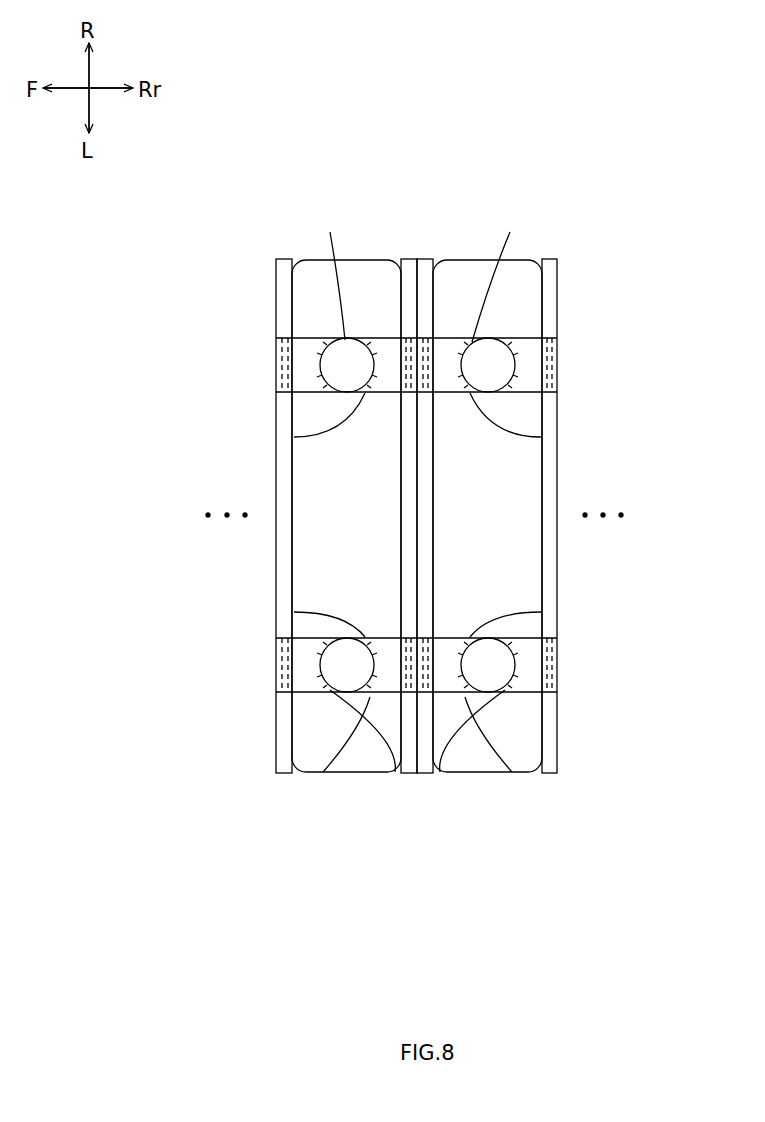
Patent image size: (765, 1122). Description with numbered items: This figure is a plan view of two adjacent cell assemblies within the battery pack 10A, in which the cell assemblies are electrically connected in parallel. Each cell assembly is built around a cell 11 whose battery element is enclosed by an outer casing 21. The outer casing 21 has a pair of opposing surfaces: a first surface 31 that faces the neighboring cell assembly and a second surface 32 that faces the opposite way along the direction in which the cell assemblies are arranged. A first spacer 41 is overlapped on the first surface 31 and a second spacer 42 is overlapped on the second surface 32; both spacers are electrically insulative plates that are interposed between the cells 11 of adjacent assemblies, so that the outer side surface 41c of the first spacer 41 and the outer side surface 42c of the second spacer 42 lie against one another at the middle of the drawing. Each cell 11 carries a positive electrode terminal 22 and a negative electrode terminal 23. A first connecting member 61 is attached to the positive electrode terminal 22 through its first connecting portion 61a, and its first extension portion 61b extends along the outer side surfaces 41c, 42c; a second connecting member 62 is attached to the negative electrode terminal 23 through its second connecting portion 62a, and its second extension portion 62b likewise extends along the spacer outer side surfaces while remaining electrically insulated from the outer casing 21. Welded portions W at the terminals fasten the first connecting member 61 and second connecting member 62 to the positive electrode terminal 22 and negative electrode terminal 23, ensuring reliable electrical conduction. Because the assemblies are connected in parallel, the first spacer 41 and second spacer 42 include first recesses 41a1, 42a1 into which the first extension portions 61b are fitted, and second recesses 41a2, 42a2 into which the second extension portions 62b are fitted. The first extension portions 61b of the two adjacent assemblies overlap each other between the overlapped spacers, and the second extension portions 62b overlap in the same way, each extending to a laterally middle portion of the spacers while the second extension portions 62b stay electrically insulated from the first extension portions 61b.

The battery pack 10A is at (664, 127).
The cell 11 is at (318, 260).
The outer casing 21 is at (294, 530).
The positive electrode terminal 22 is at (358, 340).
The negative electrode terminal 23 is at (328, 690).
The first surface 31 is at (401, 525).
The second surface 32 is at (433, 525).
The first spacer 41 is at (411, 259).
The first recess 41a1 is at (401, 400).
The second recess 41a2 is at (401, 637).
The outer side surface 41c is at (417, 490).
The second spacer 42 is at (276, 268).
The first recess 42a1 is at (276, 388).
The second recess 42a2 is at (434, 637).
The outer side surface 42c is at (276, 485).
The first connecting member 61 is at (318, 350).
The first connecting portion 61a is at (294, 437).
The first extension portion 61b is at (276, 362).
The second connecting member 62 is at (294, 612).
The second connecting portion 62a is at (322, 690).
The second extension portion 62b is at (276, 672).
The welded portion W is at (302, 342).